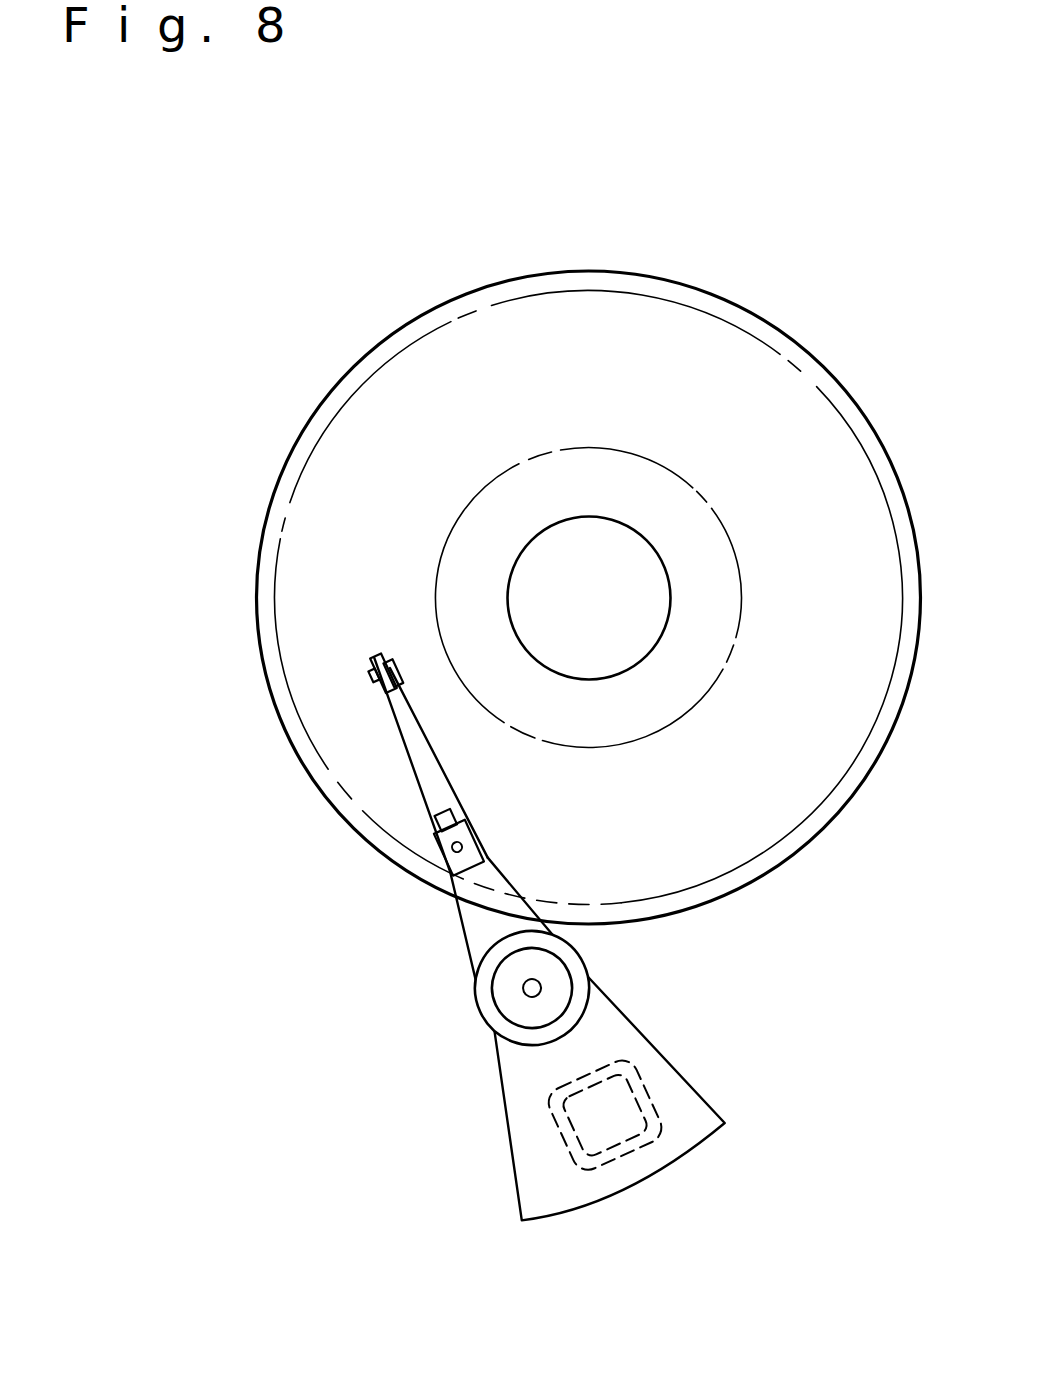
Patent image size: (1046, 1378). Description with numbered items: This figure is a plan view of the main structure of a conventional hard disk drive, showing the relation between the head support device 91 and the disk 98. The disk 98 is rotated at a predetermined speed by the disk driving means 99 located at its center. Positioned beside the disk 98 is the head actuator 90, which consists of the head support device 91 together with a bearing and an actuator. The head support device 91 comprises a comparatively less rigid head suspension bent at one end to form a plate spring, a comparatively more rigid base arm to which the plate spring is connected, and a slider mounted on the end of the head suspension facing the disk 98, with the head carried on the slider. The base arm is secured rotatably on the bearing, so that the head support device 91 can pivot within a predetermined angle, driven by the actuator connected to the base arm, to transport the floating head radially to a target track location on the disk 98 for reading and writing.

The head actuator 90 is at (230, 1277).
The head support device 91 is at (250, 1009).
The disk 98 is at (338, 507).
The disk driving means 99 is at (523, 547).